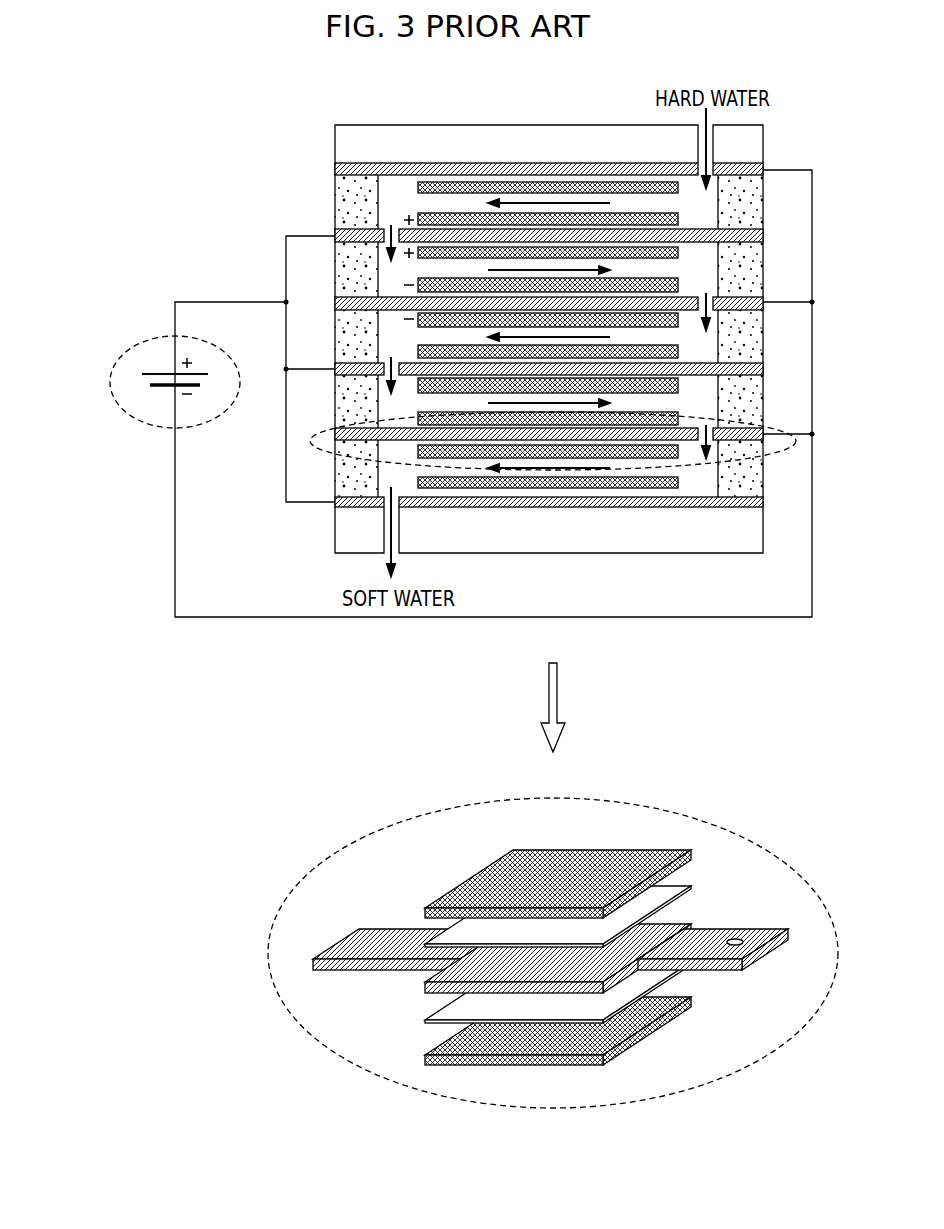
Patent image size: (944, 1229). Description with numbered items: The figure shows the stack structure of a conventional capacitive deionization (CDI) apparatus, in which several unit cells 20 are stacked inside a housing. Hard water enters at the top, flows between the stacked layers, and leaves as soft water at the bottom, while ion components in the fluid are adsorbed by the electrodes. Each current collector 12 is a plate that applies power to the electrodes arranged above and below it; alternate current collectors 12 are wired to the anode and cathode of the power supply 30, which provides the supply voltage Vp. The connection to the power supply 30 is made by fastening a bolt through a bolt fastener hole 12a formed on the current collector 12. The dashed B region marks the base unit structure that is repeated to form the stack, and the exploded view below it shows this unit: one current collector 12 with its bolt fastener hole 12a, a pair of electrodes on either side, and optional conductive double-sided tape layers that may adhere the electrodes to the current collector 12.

The current collector 12 is at (788, 942).
The bolt fastener hole 12a is at (345, 229).
The unit cell 20 is at (812, 232).
The power supply 30 is at (120, 403).
The B region B is at (553, 427).